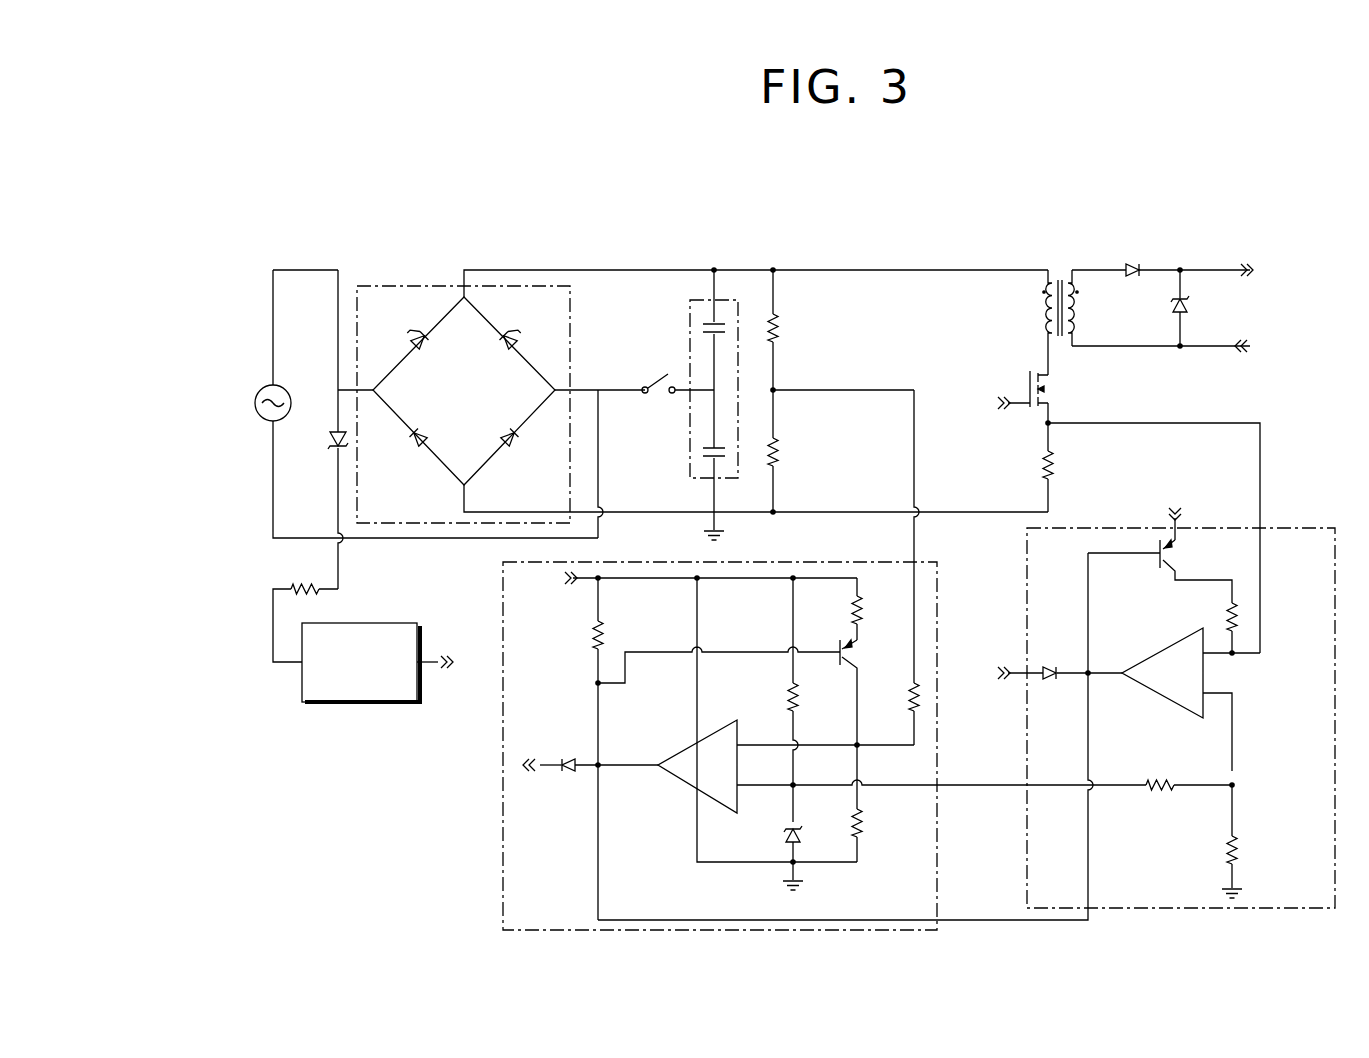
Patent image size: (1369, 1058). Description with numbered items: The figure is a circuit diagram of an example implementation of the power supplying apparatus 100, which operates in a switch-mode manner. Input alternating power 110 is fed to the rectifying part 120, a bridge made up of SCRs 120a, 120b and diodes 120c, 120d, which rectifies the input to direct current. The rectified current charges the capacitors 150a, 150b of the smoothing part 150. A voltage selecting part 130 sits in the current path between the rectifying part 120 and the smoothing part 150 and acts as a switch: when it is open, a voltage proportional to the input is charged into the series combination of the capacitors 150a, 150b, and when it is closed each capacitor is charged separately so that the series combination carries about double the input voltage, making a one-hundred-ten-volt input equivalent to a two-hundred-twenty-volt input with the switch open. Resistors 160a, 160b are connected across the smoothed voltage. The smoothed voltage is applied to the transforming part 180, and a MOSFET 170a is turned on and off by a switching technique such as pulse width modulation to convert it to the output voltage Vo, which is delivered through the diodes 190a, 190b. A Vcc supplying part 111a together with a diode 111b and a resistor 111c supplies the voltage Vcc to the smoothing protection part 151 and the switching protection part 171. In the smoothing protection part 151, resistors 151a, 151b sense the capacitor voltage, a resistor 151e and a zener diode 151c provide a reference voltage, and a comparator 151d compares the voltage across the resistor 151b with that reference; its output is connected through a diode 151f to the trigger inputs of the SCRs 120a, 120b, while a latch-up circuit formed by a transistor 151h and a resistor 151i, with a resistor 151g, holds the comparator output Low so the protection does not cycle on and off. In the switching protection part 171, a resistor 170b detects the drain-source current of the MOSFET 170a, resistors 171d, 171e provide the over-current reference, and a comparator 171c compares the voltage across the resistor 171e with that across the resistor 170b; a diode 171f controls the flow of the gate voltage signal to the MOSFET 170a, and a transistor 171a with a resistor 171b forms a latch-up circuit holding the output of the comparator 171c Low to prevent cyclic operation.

The power supplying apparatus 100 is at (1177, 179).
The input alternating power 110 is at (258, 392).
The Vcc supplying part 111a is at (300, 680).
The diode 111b is at (330, 445).
The resistor 111c is at (297, 589).
The rectifying part 120 is at (436, 286).
The SCR 120a is at (412, 345).
The SCR 120b is at (517, 345).
The diode 120c is at (418, 450).
The diode 120d is at (514, 450).
The voltage selecting part 130 is at (667, 375).
The smoothing part 150 is at (729, 300).
The capacitor 150a is at (703, 327).
The capacitor 150b is at (703, 455).
The smoothing protection part 151 is at (503, 903).
The resistor 151a is at (920, 702).
The resistor 151b is at (860, 830).
The zener diode 151c is at (797, 838).
The comparator 151d is at (690, 786).
The resistor 151e is at (790, 697).
The diode 151f is at (570, 775).
The resistor 151g is at (595, 643).
The transistor 151h is at (845, 655).
The resistor 151i is at (862, 608).
The resistor 160a is at (777, 328).
The resistor 160b is at (785, 455).
The MOSFET 170a is at (1052, 385).
The resistor 170b is at (1060, 465).
The switching protection part 171 is at (1325, 528).
The transistor 171a is at (1178, 550).
The resistor 171b is at (1240, 617).
The comparator 171c is at (1205, 673).
The resistor 171d is at (1170, 785).
The resistor 171e is at (1240, 850).
The diode 171f is at (1053, 666).
The transforming part 180 is at (1060, 283).
The diode 190a is at (1133, 263).
The diode 190b is at (1192, 303).